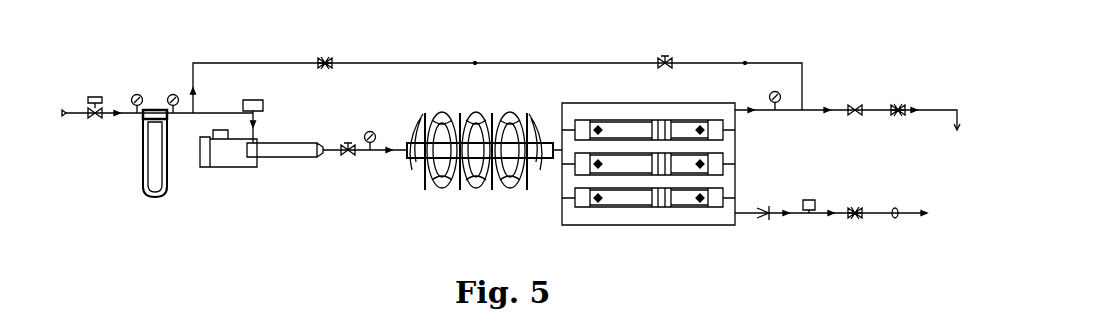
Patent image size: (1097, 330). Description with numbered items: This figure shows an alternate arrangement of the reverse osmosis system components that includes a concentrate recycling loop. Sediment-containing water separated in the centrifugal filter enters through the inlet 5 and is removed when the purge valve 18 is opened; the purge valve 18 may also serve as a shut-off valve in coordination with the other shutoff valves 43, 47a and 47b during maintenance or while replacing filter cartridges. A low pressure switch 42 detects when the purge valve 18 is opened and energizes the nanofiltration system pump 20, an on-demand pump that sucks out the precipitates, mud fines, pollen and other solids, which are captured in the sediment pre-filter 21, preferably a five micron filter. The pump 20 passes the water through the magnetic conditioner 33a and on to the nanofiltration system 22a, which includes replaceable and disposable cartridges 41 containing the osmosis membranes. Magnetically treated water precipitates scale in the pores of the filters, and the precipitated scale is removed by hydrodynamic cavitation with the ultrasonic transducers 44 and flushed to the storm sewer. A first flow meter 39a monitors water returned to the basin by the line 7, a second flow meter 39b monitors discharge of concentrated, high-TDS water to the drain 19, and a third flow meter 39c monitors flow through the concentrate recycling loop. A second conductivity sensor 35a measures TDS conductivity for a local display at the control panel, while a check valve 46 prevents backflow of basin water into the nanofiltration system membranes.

The feed water inlet 5 is at (62, 110).
The purge valve 18 is at (93, 97).
The pre-filter 21 is at (142, 157).
The third flow meter 39c is at (322, 57).
The low pressure switch 42 is at (263, 100).
The nanofiltration system pump 20 is at (220, 170).
The shutoff valve 43 is at (346, 158).
The magnetic conditioner 33a is at (405, 160).
The shutoff valve 47a is at (668, 56).
The ultrasonic transducers 44 is at (700, 160).
The nanofiltration system 22a is at (562, 214).
The replaceable and disposable cartridges 41 is at (634, 165).
The shutoff valve 47b is at (857, 104).
The second flow meter 39b is at (900, 104).
The drain 19 is at (955, 130).
The check valve 46 is at (765, 208).
The second conductivity sensor 35a is at (812, 200).
The first flow meter 39a is at (858, 207).
The line 7 is at (894, 218).